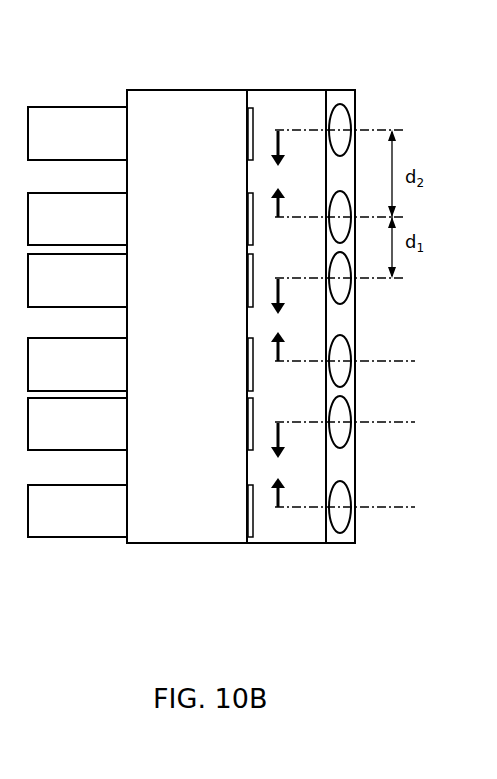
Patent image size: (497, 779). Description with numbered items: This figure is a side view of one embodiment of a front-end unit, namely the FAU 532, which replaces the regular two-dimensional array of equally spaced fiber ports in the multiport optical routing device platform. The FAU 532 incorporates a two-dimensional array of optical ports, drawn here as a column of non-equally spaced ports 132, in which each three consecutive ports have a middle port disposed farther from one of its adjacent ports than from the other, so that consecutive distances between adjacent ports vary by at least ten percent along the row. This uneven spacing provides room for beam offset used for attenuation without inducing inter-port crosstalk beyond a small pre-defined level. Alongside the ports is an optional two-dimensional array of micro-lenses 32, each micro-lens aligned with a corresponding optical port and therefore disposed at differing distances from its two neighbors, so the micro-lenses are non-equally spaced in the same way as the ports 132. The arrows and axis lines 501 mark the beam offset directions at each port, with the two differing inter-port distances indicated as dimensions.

The FAU 532 is at (202, 60).
The non-equally spaced ports 132 is at (55, 107).
The two-dimensional array of micro-lenses 32 is at (342, 90).
The magnetic field direction arrows 501 is at (283, 135).